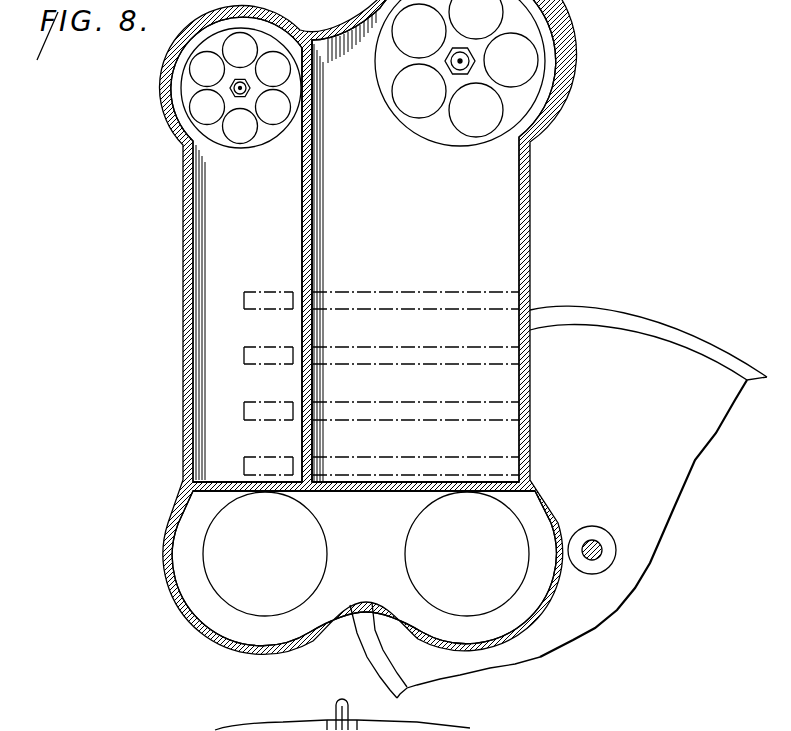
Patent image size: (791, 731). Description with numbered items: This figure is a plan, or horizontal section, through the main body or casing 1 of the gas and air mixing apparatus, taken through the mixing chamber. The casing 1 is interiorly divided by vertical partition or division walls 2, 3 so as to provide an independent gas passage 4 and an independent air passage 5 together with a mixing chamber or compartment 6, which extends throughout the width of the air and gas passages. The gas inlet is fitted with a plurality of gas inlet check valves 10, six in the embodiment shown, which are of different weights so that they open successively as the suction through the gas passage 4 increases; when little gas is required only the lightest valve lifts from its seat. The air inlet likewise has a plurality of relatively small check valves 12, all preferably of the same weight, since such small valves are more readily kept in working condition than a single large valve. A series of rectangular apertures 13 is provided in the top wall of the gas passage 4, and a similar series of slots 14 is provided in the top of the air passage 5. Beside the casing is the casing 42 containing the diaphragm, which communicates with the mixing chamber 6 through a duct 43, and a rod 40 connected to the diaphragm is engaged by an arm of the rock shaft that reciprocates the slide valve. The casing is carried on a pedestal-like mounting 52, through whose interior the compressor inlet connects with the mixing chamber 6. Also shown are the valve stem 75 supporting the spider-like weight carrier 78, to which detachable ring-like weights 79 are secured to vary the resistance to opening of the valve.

The main body or casing 1 is at (183, 245).
The vertical partition wall 2 is at (312, 223).
The vertical division wall 3 is at (379, 490).
The gas passage 4 is at (236, 249).
The air passage 5 is at (434, 241).
The mixing chamber 6 is at (364, 568).
The gas inlet check valve 10 is at (279, 116).
The air inlet check valve 12 is at (467, 118).
The rectangular aperture 13 is at (272, 311).
The slot 14 is at (402, 309).
The rod 40 is at (598, 543).
The diaphragm casing 42 is at (678, 481).
The duct 43 is at (448, 603).
The pedestal-like mounting 52 is at (278, 612).
The valve stem 75 is at (368, 730).
The spider-like weight carrier 78 is at (477, 728).
The ring-like weight 79 is at (253, 723).